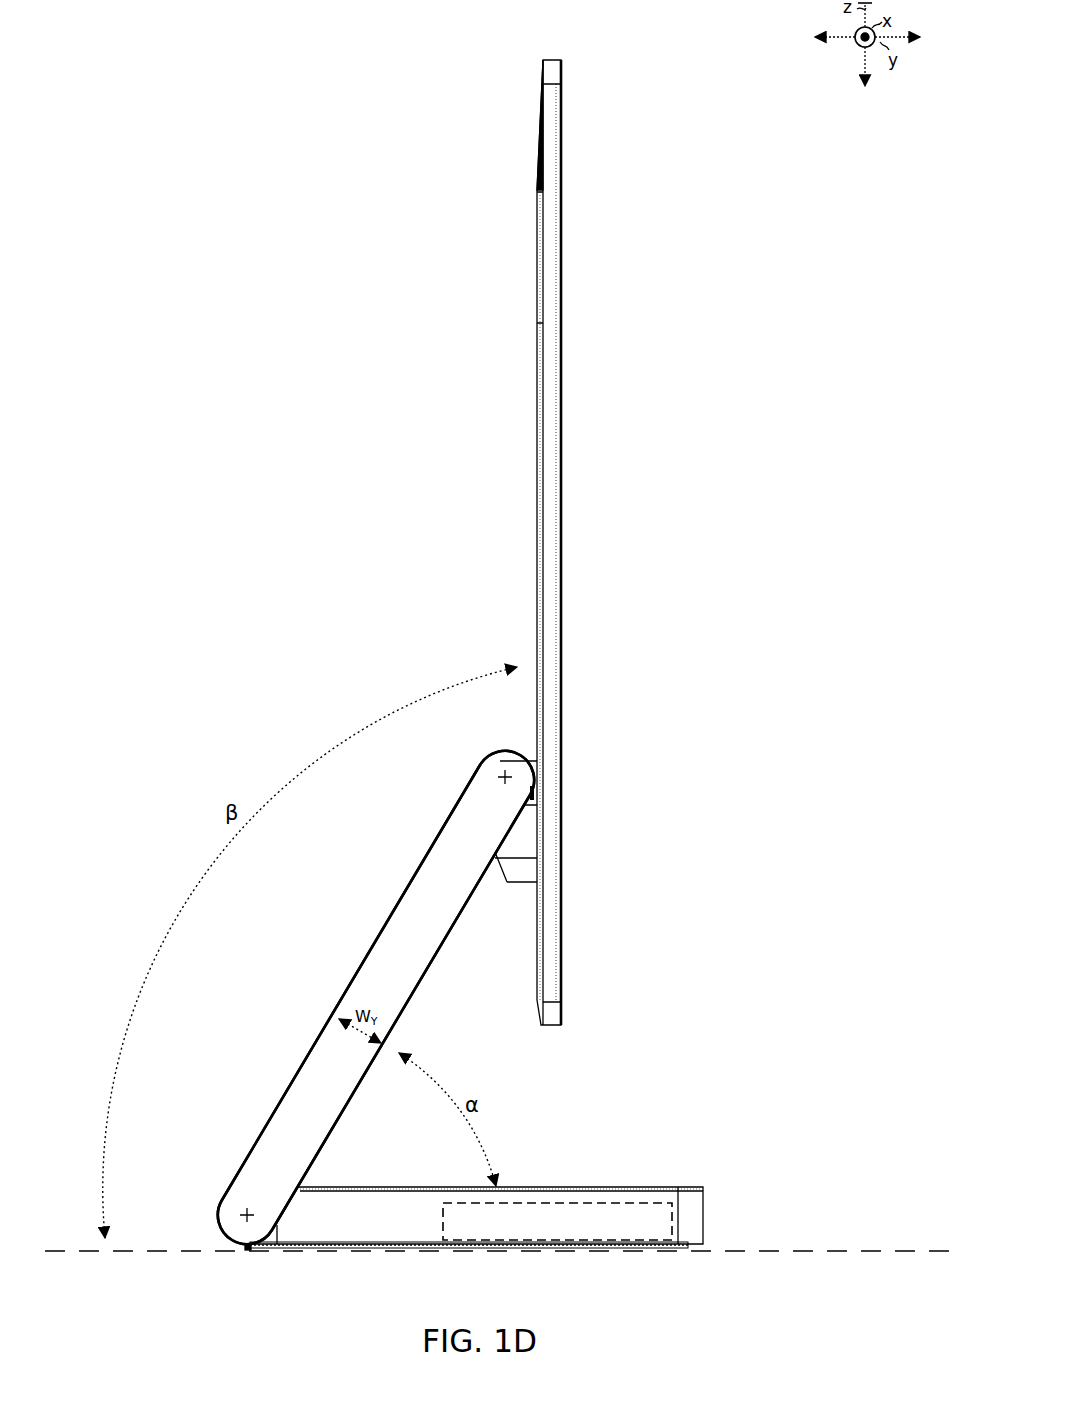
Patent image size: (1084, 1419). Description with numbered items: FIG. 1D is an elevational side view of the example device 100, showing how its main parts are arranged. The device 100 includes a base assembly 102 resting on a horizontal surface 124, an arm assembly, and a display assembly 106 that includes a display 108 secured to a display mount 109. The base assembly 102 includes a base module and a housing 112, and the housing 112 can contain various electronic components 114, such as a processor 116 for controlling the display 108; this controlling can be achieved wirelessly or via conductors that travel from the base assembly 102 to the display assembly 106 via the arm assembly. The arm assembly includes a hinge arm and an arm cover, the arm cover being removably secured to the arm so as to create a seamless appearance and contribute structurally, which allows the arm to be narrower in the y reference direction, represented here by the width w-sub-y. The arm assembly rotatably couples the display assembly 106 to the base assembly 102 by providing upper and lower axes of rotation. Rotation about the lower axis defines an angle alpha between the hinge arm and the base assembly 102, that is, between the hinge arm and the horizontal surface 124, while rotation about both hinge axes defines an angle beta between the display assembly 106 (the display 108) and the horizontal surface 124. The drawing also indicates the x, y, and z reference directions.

The device 100 is at (537, 40).
The base assembly 102 is at (810, 1205).
The display assembly 106 is at (535, 607).
The display 108 is at (562, 709).
The display mount 109 is at (512, 873).
The housing 112 is at (698, 1189).
The electronic components 114 is at (629, 1200).
The processor 116 is at (643, 1233).
The horizontal surface 124 is at (500, 1250).